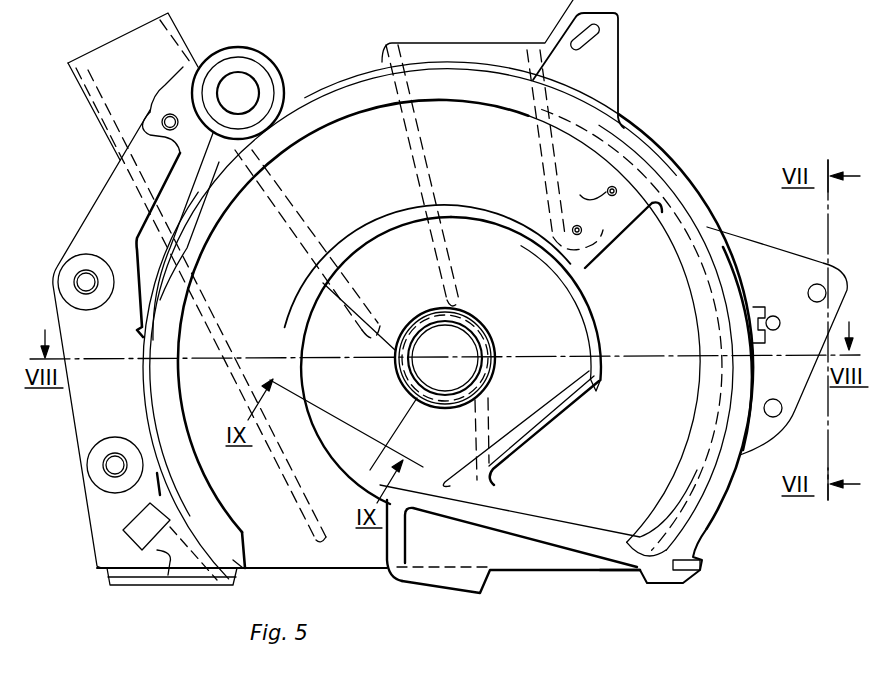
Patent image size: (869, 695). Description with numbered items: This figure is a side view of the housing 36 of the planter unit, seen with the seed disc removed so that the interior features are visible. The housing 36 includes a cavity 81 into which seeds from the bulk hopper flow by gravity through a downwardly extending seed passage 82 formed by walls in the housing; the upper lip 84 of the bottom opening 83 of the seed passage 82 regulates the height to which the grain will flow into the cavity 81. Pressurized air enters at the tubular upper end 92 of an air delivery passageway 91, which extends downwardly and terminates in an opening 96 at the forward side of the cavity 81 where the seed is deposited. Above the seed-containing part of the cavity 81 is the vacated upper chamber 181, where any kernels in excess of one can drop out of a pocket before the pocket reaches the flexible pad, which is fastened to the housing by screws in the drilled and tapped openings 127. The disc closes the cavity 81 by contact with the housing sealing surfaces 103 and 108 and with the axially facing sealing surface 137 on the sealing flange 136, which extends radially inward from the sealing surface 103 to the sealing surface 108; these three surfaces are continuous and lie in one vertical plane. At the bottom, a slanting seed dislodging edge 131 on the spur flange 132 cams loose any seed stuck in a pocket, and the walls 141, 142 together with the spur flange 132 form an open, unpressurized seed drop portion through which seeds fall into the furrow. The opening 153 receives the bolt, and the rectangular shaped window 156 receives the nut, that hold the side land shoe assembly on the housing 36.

The housing 36 is at (680, 180).
The cavity 81 is at (700, 495).
The seed passage 82 is at (596, 303).
The bottom opening 83 is at (553, 425).
The upper lip 84 is at (602, 380).
The air delivery passageway 91 is at (282, 226).
The upper end 92 is at (90, 92).
The opening 96 is at (343, 318).
The sealing surface 103 is at (476, 96).
The sealing surface 108 is at (312, 425).
The drilled and tapped openings 127 is at (577, 224).
The seed dislodging edge 131 is at (430, 578).
The spur flange 132 is at (390, 550).
The sealing flange 136 is at (557, 550).
The sealing surface 137 is at (590, 533).
The wall 141 is at (247, 545).
The wall 142 is at (310, 560).
The opening 153 is at (167, 567).
The rectangular shaped window 156 is at (128, 526).
The upper chamber 181 is at (695, 228).